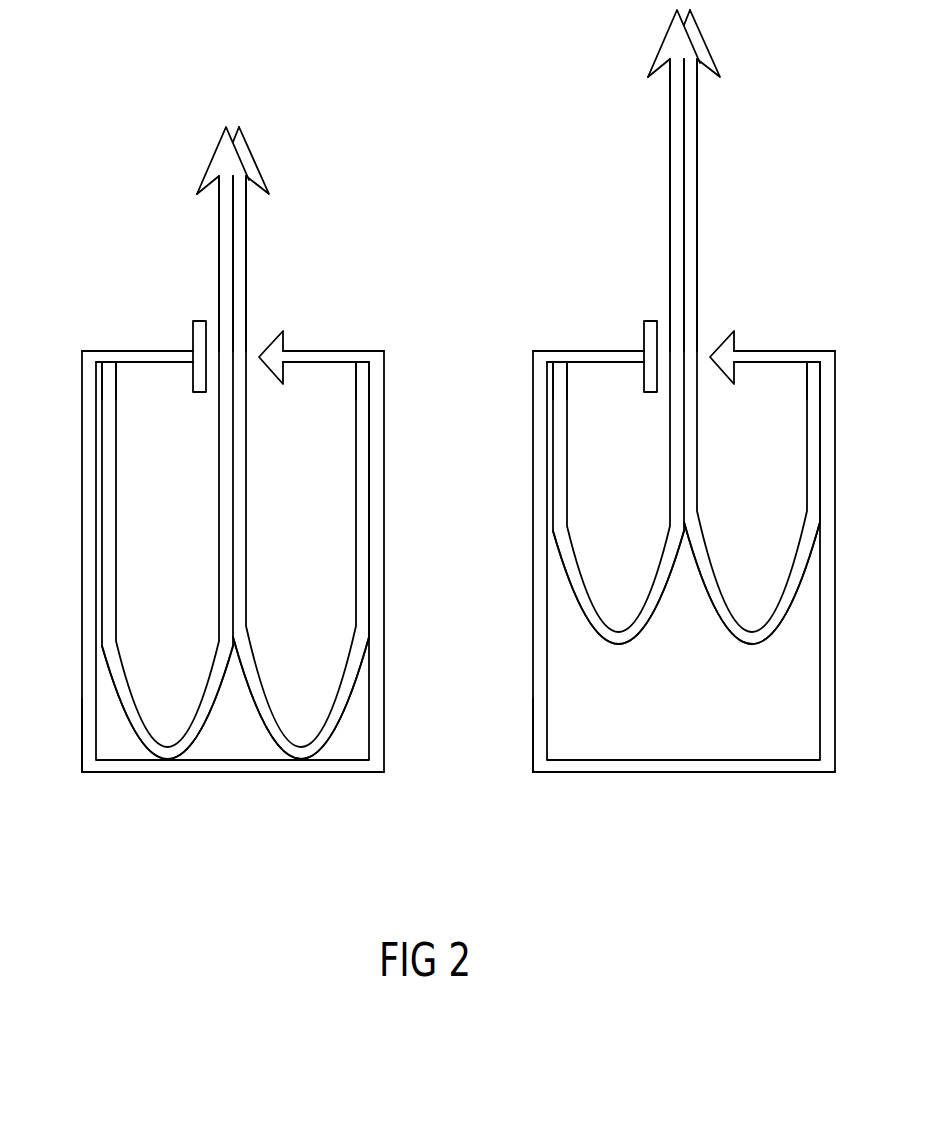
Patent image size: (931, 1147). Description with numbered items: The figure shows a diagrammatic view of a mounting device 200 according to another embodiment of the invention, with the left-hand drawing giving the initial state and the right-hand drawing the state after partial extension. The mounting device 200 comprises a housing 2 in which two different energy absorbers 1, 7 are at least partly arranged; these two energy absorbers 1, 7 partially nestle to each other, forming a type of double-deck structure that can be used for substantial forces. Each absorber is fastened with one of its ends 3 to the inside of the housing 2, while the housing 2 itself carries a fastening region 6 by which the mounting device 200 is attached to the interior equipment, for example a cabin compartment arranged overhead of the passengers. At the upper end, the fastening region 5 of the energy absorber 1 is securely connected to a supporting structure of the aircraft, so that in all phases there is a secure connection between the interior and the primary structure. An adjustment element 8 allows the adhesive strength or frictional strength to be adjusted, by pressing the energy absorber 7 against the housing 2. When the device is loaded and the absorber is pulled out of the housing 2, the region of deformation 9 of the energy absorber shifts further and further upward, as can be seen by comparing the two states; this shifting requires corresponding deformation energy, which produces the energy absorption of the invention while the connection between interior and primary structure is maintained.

The energy absorber 1 is at (356, 483).
The housing 2 is at (341, 768).
The end of the energy absorber 3 is at (110, 368).
The fastening region of the energy absorber 5 is at (222, 165).
The fastening region 6 is at (81, 580).
The energy absorber 7 is at (112, 486).
The adjustment element 8 is at (267, 345).
The region of deformation 9 is at (202, 736).
The mounting device 200 is at (156, 838).